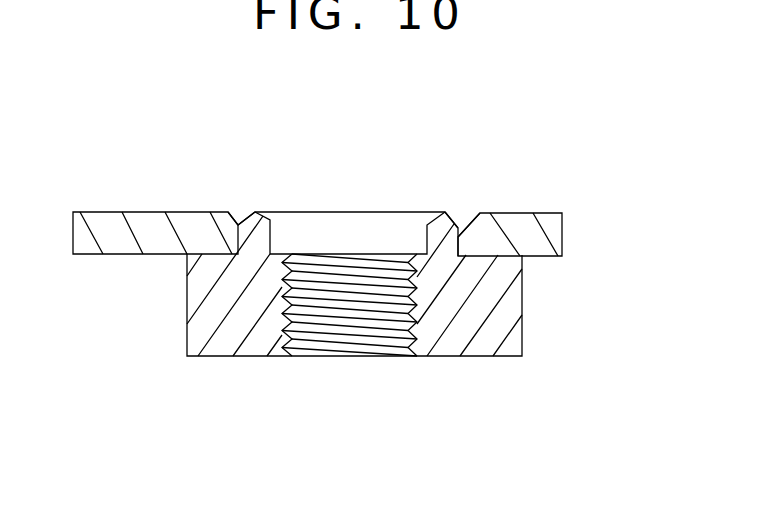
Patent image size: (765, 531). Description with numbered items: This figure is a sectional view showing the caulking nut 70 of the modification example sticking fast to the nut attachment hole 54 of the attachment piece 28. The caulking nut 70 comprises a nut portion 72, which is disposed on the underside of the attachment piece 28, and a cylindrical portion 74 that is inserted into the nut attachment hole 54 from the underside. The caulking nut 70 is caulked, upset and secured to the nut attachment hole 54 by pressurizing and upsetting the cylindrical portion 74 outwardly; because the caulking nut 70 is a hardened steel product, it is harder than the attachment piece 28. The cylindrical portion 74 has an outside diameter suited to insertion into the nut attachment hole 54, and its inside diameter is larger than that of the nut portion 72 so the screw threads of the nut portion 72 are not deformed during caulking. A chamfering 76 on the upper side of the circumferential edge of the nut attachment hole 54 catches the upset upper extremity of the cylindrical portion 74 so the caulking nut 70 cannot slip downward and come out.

The attachment piece 28 is at (522, 227).
The nut attachment hole 54 is at (418, 224).
The caulking nut 70 is at (440, 378).
The nut portion 72 is at (507, 320).
The cylindrical portion 74 is at (246, 220).
The chamfering 76 is at (459, 236).